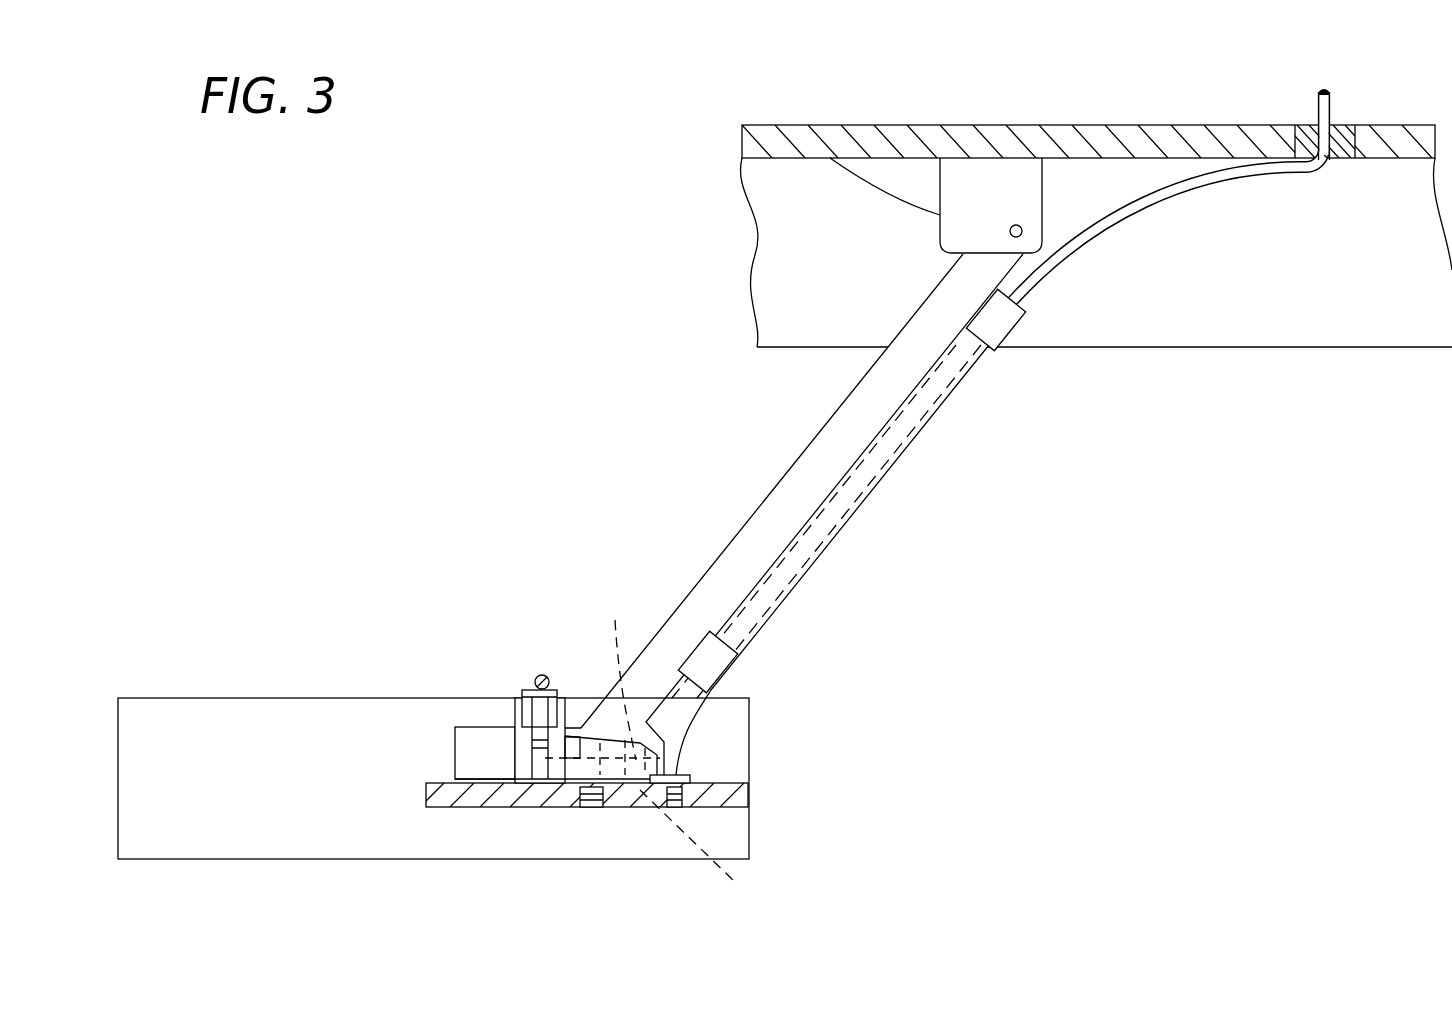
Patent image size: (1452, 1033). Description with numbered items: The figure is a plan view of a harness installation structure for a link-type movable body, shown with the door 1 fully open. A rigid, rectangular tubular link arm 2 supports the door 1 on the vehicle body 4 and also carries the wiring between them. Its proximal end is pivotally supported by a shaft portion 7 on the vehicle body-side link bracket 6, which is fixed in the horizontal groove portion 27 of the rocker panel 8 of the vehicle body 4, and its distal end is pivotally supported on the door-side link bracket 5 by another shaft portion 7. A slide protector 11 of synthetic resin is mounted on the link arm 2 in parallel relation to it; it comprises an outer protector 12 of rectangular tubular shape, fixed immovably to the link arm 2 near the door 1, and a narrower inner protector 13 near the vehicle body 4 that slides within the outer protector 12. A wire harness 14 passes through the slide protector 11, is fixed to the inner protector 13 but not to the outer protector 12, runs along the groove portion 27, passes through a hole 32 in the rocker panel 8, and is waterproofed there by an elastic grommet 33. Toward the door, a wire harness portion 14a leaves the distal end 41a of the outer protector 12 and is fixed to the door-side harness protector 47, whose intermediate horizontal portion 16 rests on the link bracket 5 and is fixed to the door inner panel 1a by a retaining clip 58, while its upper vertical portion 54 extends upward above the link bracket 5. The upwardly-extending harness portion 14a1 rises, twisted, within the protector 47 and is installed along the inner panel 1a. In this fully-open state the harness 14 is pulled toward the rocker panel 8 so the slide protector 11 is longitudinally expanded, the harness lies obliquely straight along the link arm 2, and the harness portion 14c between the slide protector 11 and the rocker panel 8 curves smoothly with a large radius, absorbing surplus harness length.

The door 1 is at (392, 868).
The inner panel 1a is at (732, 784).
The link arm 2 is at (742, 526).
The vehicle body 4 is at (1306, 356).
The link bracket 5 is at (455, 756).
The link bracket 6 is at (830, 123).
The shaft portion 7 is at (1014, 224).
The rocker panel 8 is at (1064, 349).
The slide protector 11 is at (870, 510).
The outer protector 12 is at (912, 442).
The inner protector 13 is at (998, 323).
The wire harness 14 is at (1190, 205).
The wire harness portion 14a is at (616, 674).
The upwardly-extending harness portion 14a1 is at (703, 852).
The harness portion 14c is at (1105, 230).
The intermediate horizontal portion 16 is at (610, 808).
The groove portion 27 is at (883, 170).
The hole 32 is at (1307, 122).
The waterproof grommet 33 is at (1344, 122).
The distal end 41a is at (678, 763).
The harness protector 47 is at (628, 810).
The upper vertical portion 54 is at (523, 768).
The retaining clip 58 is at (590, 810).